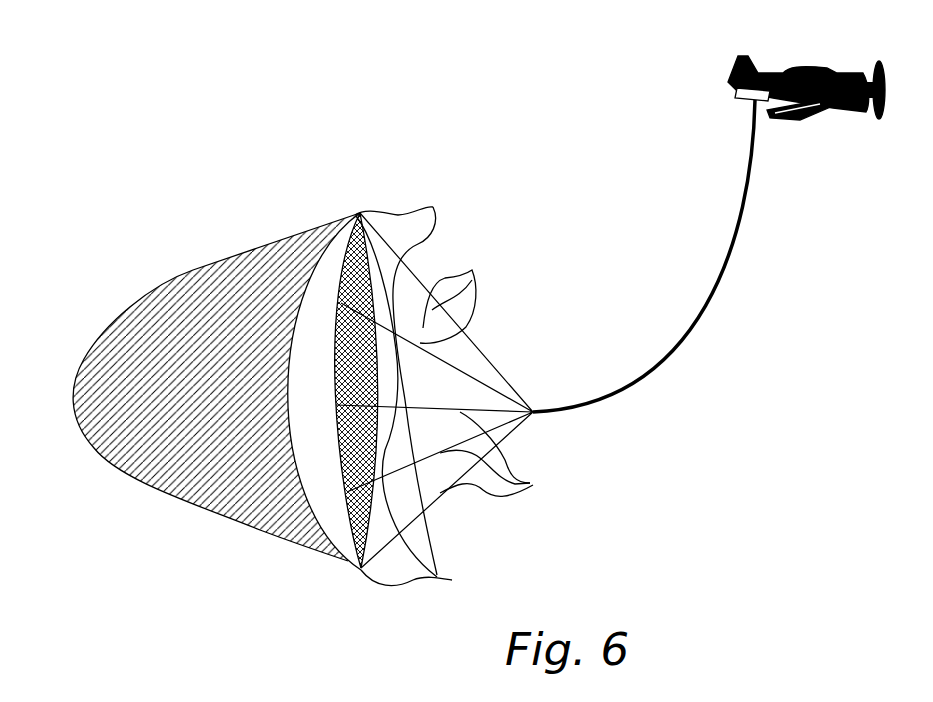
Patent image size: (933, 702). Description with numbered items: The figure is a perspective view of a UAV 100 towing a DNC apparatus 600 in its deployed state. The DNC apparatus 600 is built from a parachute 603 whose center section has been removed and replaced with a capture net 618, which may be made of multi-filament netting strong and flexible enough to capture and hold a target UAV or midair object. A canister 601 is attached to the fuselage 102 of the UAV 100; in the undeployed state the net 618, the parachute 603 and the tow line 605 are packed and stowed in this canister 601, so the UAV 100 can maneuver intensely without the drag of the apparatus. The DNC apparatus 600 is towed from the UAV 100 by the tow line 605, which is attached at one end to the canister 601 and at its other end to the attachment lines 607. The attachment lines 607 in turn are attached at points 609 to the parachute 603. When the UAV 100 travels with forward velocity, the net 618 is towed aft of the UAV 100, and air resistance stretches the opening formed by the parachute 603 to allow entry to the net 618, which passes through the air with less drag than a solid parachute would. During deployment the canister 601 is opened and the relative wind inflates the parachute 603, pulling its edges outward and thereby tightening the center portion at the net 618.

The DNC apparatus 600 is at (245, 90).
The UAV 100 is at (781, 33).
The fuselage 102 is at (827, 113).
The canister 601 is at (740, 97).
The parachute 603 is at (343, 248).
The tow line 605 is at (312, 512).
The attachment lines 607 is at (495, 369).
The attachment points 609 is at (420, 384).
The capture net 618 is at (199, 307).